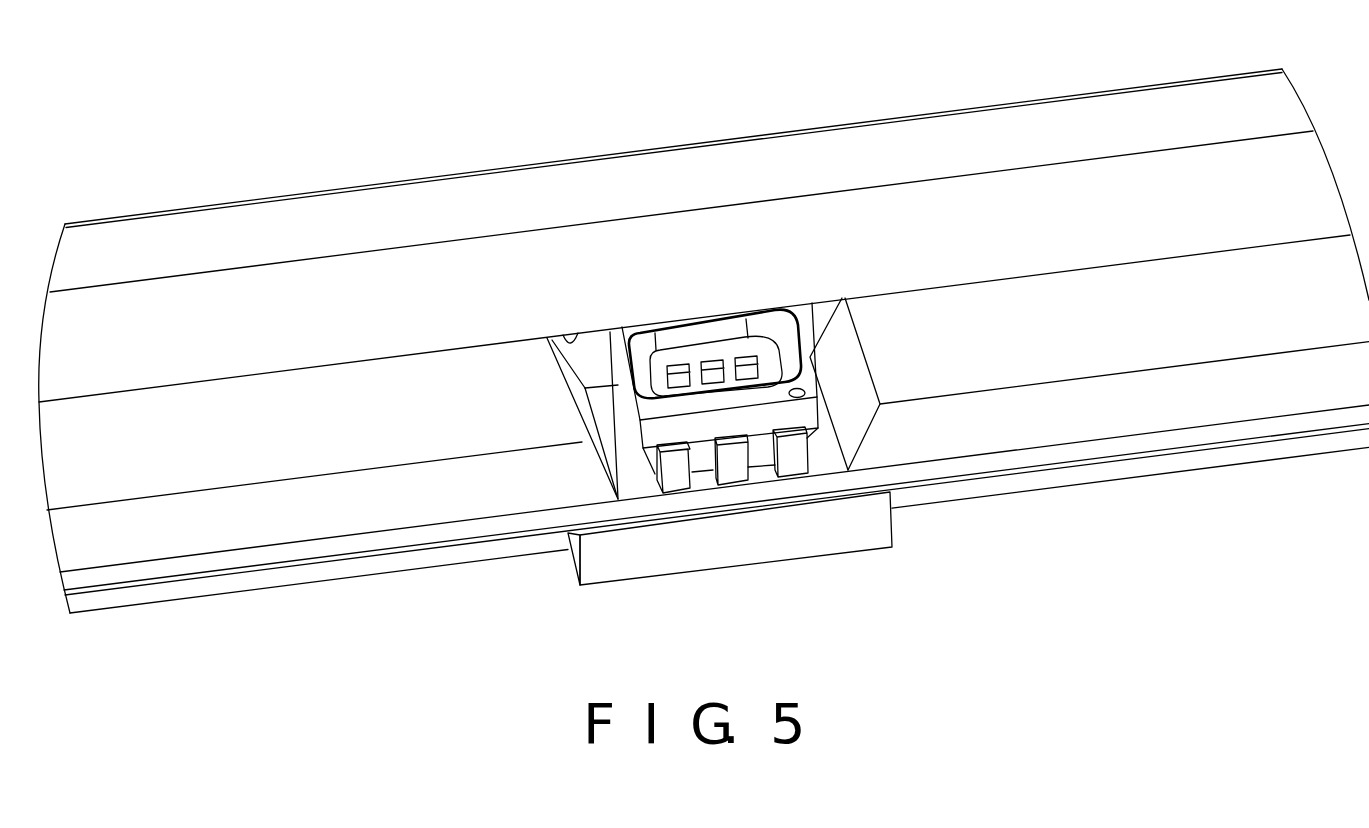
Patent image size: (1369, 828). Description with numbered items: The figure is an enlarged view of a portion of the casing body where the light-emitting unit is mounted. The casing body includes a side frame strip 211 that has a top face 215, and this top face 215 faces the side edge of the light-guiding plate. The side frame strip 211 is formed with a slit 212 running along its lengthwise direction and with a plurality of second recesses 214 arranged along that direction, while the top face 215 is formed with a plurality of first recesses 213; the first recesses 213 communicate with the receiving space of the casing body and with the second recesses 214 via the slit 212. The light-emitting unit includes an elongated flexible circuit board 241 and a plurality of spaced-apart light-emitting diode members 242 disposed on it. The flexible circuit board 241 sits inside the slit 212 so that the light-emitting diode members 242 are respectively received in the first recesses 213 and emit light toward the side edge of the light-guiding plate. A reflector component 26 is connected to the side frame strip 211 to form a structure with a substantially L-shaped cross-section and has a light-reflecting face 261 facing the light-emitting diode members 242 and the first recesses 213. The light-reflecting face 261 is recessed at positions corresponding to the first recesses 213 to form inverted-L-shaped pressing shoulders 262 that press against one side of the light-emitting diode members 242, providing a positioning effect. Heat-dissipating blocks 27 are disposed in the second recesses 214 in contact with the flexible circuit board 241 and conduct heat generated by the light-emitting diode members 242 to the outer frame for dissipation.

The reflector component 26 is at (597, 188).
The light-reflecting face 261 is at (780, 220).
The pressing shoulder 262 is at (563, 335).
The side frame strip 211 is at (362, 495).
The slit 212 is at (477, 518).
The first recess 213 is at (843, 358).
The second recess 214 is at (580, 536).
The top face 215 is at (1052, 305).
The flexible circuit board 241 is at (983, 478).
The light-emitting diode member 242 is at (783, 313).
The heat-dissipating block 27 is at (770, 535).